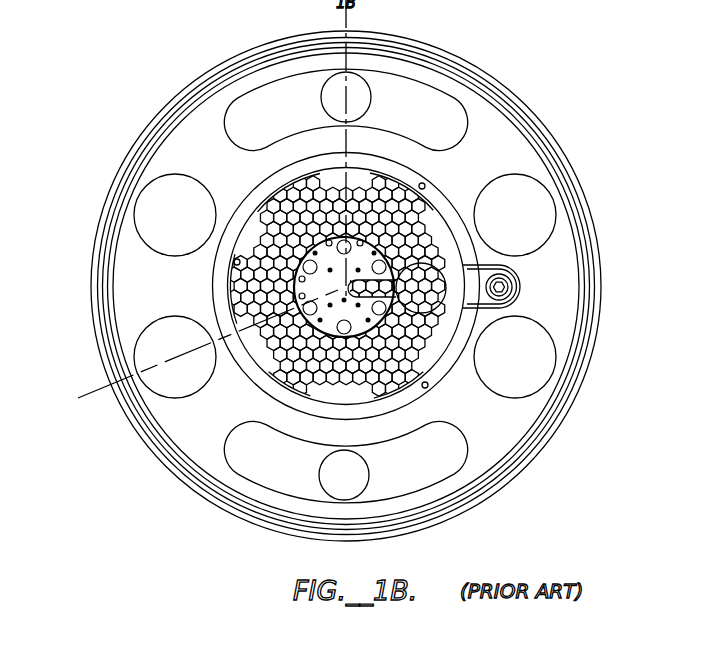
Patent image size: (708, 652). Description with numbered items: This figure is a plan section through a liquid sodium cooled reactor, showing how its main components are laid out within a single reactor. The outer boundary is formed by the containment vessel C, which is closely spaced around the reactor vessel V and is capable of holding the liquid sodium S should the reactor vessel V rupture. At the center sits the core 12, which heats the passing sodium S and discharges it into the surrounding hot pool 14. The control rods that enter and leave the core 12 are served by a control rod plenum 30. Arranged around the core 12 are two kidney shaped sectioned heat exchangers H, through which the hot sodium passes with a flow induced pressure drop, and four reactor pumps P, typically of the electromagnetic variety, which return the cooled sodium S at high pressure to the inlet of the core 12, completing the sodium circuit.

The core 12 is at (267, 305).
The hot pool 14 is at (248, 189).
The control rod plenum 30 is at (333, 286).
The liquid sodium S is at (200, 166).
The heat exchanger H is at (305, 115).
The reactor pump P is at (180, 230).
The reactor vessel V is at (108, 301).
The containment vessel C is at (577, 397).